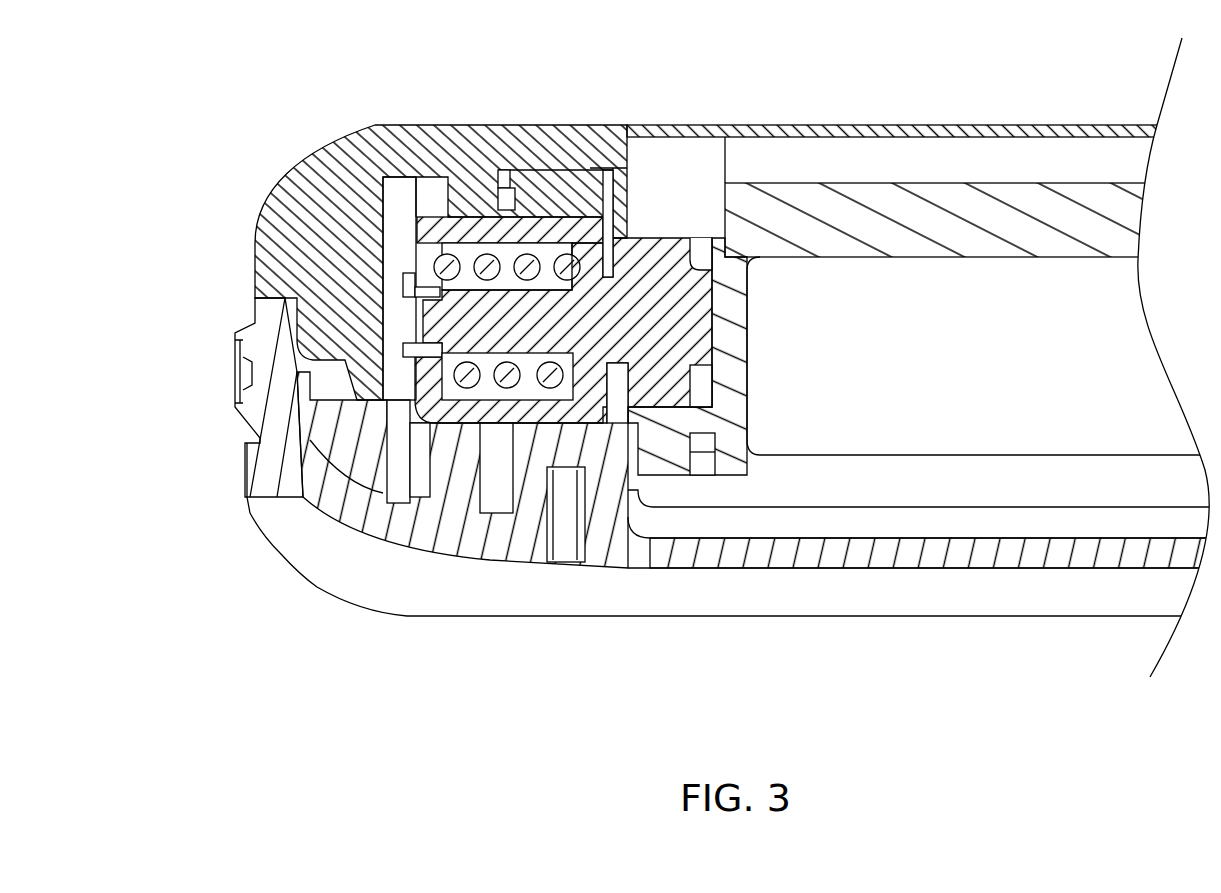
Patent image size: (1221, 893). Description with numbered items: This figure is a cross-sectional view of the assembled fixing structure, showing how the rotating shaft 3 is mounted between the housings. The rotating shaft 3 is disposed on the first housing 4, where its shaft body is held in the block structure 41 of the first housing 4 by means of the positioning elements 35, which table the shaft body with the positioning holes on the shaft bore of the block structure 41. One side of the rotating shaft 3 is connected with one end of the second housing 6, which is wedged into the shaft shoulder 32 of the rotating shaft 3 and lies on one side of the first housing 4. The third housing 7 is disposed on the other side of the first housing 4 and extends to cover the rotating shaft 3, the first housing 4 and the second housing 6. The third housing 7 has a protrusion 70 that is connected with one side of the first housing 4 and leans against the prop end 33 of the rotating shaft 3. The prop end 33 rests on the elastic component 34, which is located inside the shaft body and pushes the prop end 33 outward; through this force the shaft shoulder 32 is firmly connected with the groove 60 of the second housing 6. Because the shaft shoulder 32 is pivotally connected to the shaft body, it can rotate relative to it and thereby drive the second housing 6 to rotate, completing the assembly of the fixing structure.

The rotating shaft 3 is at (632, 272).
The first housing 4 is at (890, 597).
The second housing 6 is at (927, 210).
The third housing 7 is at (327, 190).
The shaft shoulder 32 is at (645, 275).
The prop end 33 is at (398, 330).
The elastic component 34 is at (455, 385).
The positioning elements 35 is at (462, 213).
The block structure 41 is at (545, 193).
The groove 60 is at (713, 250).
The protrusion 70 is at (340, 290).